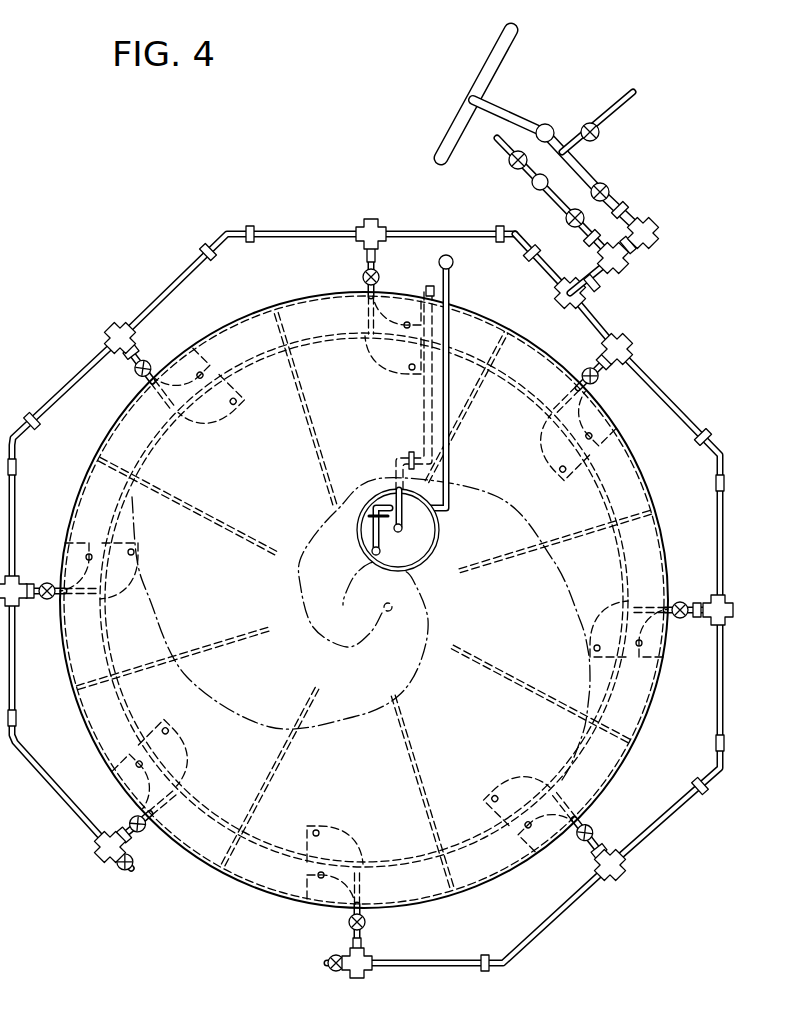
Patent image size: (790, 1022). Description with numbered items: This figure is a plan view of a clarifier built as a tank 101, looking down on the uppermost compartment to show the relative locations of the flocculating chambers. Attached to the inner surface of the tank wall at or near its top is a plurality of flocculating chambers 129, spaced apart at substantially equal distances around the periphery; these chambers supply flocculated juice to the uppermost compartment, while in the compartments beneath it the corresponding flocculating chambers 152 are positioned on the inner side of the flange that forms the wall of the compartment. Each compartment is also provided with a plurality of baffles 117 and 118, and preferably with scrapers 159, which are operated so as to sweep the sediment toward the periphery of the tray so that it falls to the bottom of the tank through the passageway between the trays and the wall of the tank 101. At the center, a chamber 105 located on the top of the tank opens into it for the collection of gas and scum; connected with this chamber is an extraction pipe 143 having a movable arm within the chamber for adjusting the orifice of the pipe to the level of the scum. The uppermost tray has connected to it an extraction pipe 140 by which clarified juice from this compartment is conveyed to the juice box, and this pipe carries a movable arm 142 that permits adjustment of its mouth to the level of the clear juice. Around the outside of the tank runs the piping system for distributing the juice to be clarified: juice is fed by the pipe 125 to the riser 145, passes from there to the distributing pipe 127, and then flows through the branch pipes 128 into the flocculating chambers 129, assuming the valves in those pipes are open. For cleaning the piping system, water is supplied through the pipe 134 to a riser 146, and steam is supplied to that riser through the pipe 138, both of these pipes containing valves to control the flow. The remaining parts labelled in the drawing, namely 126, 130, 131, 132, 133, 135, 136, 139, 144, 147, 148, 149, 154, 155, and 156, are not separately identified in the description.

The tank 101 is at (274, 898).
The chamber 105 is at (415, 530).
The baffles 117 is at (188, 501).
The baffles 118 is at (318, 436).
The pipe 125 is at (507, 42).
The supply branch pipe 126 is at (590, 168).
The distributing pipe 127 is at (290, 238).
The branch pipes 128 is at (377, 256).
The flocculating chambers 129 is at (199, 367).
The inlet valve 130 is at (380, 278).
The tee fitting 131 is at (378, 222).
The valve 132 is at (612, 187).
The tee fitting 133 is at (656, 234).
The pipe 134 is at (500, 152).
The valve 135 is at (565, 211).
The tee fitting 136 is at (562, 230).
The pipe 138 is at (620, 108).
The valve 139 is at (603, 133).
The extraction pipe 140 is at (420, 416).
The movable arm 142 is at (401, 528).
The extraction pipe 143 is at (446, 465).
The outlet nozzle 144 is at (381, 549).
The riser 145 is at (547, 124).
The riser 146 is at (533, 189).
The outer pocket 147 is at (410, 322).
The pipe coupling 148 is at (630, 266).
The central outlet 149 is at (398, 606).
The flocculating chambers 152 is at (222, 421).
The nozzle 154 is at (258, 399).
The drain valve 155 is at (120, 866).
The valve 156 is at (509, 166).
The scrapers 159 is at (153, 612).